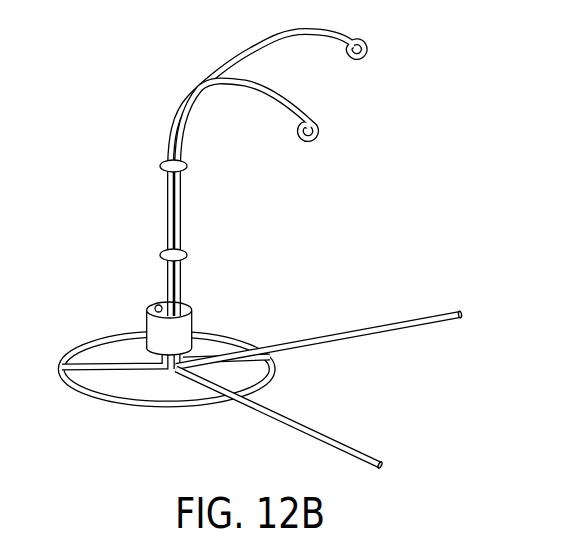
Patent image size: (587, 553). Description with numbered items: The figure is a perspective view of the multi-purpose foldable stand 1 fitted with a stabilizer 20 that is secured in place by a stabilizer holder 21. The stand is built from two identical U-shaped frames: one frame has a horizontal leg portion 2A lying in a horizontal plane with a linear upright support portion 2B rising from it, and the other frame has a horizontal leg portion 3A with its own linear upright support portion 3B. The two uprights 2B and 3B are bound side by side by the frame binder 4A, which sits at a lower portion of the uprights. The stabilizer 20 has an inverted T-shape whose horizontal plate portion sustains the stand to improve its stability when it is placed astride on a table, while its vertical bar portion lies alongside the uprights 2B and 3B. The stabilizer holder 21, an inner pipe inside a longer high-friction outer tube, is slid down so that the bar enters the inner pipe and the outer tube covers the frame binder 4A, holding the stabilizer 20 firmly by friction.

The multi-purpose foldable stand 1 is at (185, 68).
The linear upright support portion 2B is at (167, 210).
The linear upright support portion 3B is at (182, 223).
The frame binder 4A is at (160, 166).
The stabilizer 20 is at (107, 322).
The stabilizer holder 21 is at (194, 321).
The horizontal leg portion 3A is at (362, 325).
The horizontal leg portion 2A is at (293, 433).